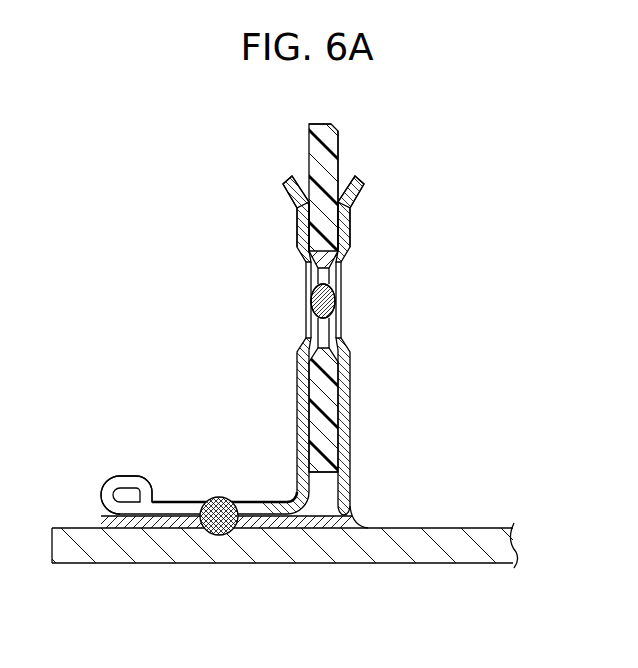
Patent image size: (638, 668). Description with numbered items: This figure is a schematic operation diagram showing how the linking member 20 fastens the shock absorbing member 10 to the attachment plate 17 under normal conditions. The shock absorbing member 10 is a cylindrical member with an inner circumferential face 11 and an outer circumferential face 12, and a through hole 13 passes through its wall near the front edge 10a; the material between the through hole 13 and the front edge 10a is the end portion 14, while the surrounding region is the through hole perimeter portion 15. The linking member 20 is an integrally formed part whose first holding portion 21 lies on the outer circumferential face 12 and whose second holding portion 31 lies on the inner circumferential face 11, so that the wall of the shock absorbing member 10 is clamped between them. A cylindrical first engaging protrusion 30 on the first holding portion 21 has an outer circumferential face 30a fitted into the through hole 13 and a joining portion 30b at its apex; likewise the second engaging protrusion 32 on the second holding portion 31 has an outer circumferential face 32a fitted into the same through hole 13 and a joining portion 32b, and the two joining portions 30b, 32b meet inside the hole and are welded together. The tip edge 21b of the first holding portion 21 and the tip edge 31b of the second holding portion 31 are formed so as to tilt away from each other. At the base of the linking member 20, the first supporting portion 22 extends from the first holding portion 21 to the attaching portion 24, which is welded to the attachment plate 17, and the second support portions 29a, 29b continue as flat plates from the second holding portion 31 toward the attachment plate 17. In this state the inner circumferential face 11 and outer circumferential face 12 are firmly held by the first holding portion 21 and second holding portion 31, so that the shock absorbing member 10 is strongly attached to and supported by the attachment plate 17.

The shock absorbing member 10 is at (338, 129).
The front edge 10a is at (338, 476).
The inner circumferential face 11 is at (337, 141).
The outer circumferential face 12 is at (307, 130).
The through hole 13 is at (341, 262).
The end portion 14 is at (333, 434).
The through hole perimeter portion 15 is at (312, 234).
The attachment plate 17 is at (351, 565).
The linking member 20 is at (351, 380).
The first holding portion 21 is at (297, 209).
The tip edge 21b is at (283, 181).
The first supporting portion 22 is at (295, 497).
The attaching portion 24 is at (178, 498).
The second support portion 29a is at (352, 514).
The second support portion 29b is at (352, 514).
The first engaging protrusion 30 is at (246, 293).
The outer circumferential face 30a is at (304, 265).
The joining portion 30b is at (311, 298).
The second holding portion 31 is at (350, 210).
The tip edge 31b is at (366, 176).
The second engaging protrusion 32 is at (381, 298).
The outer circumferential face 32a is at (344, 263).
The joining portion 32b is at (336, 296).